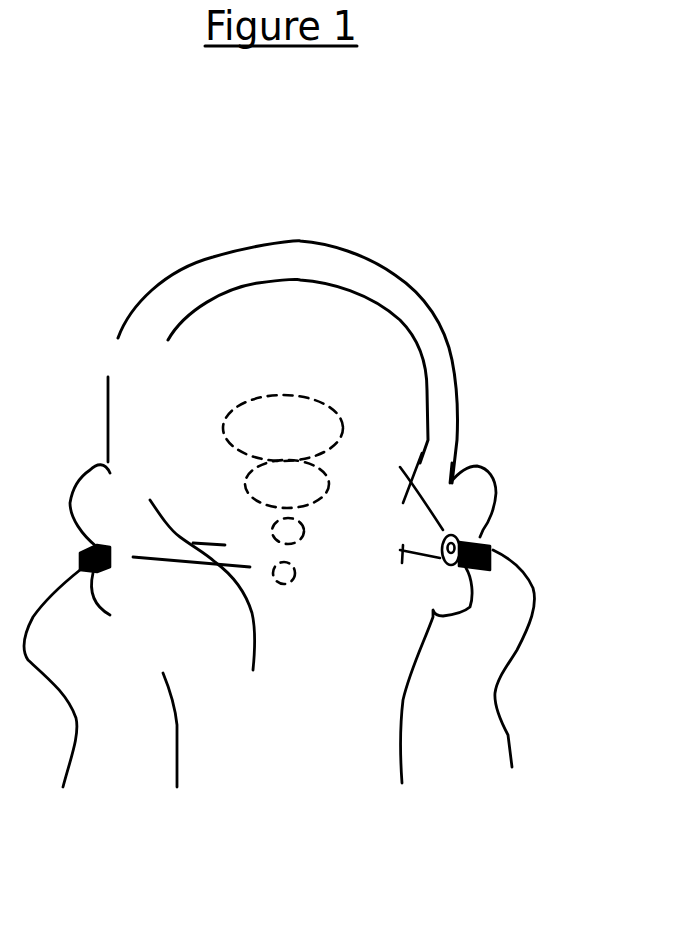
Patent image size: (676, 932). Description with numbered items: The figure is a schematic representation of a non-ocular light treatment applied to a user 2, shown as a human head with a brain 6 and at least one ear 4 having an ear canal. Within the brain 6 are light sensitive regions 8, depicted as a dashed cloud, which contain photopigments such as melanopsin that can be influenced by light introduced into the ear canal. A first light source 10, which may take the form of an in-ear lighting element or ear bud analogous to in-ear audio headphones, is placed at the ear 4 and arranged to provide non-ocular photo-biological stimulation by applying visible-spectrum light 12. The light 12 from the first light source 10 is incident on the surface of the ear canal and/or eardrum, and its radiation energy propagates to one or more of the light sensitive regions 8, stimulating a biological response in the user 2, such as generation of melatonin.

The user 2 is at (445, 352).
The ear 4 is at (480, 483).
The brain 6 is at (367, 317).
The light sensitive regions 8 is at (297, 403).
The first light source 10 is at (490, 547).
The visible-spectrum light 12 is at (279, 582).